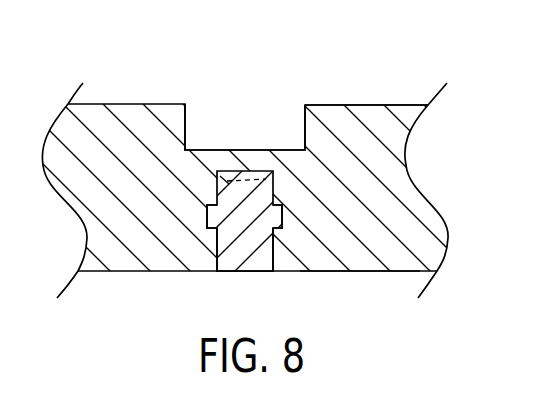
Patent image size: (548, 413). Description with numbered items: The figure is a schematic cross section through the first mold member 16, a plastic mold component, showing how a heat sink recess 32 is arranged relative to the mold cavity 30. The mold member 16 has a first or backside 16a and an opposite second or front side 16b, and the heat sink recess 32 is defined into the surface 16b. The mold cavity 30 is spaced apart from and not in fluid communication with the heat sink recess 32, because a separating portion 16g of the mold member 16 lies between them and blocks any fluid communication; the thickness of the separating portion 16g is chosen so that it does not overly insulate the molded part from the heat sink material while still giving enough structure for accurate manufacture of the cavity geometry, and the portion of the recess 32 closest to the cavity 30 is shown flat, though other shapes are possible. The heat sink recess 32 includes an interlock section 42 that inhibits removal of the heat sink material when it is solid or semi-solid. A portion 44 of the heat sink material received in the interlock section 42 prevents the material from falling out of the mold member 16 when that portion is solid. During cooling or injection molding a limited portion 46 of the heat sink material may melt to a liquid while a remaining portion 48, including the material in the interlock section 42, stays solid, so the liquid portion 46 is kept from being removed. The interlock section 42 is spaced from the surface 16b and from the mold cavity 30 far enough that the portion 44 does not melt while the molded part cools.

The first mold member 16 is at (413, 195).
The backside of first mold member 16a is at (372, 272).
The front side of first mold member 16b is at (365, 105).
The separating portion 16g is at (227, 163).
The mold cavity 30 is at (242, 108).
The heat sink recess 32 is at (218, 238).
The interlock section 42 is at (294, 216).
The portion of heat sink material received in interlock section 44 is at (209, 215).
The liquid portion of heat sink material 46 is at (258, 172).
The remaining solid portion of heat sink material 48 is at (263, 230).